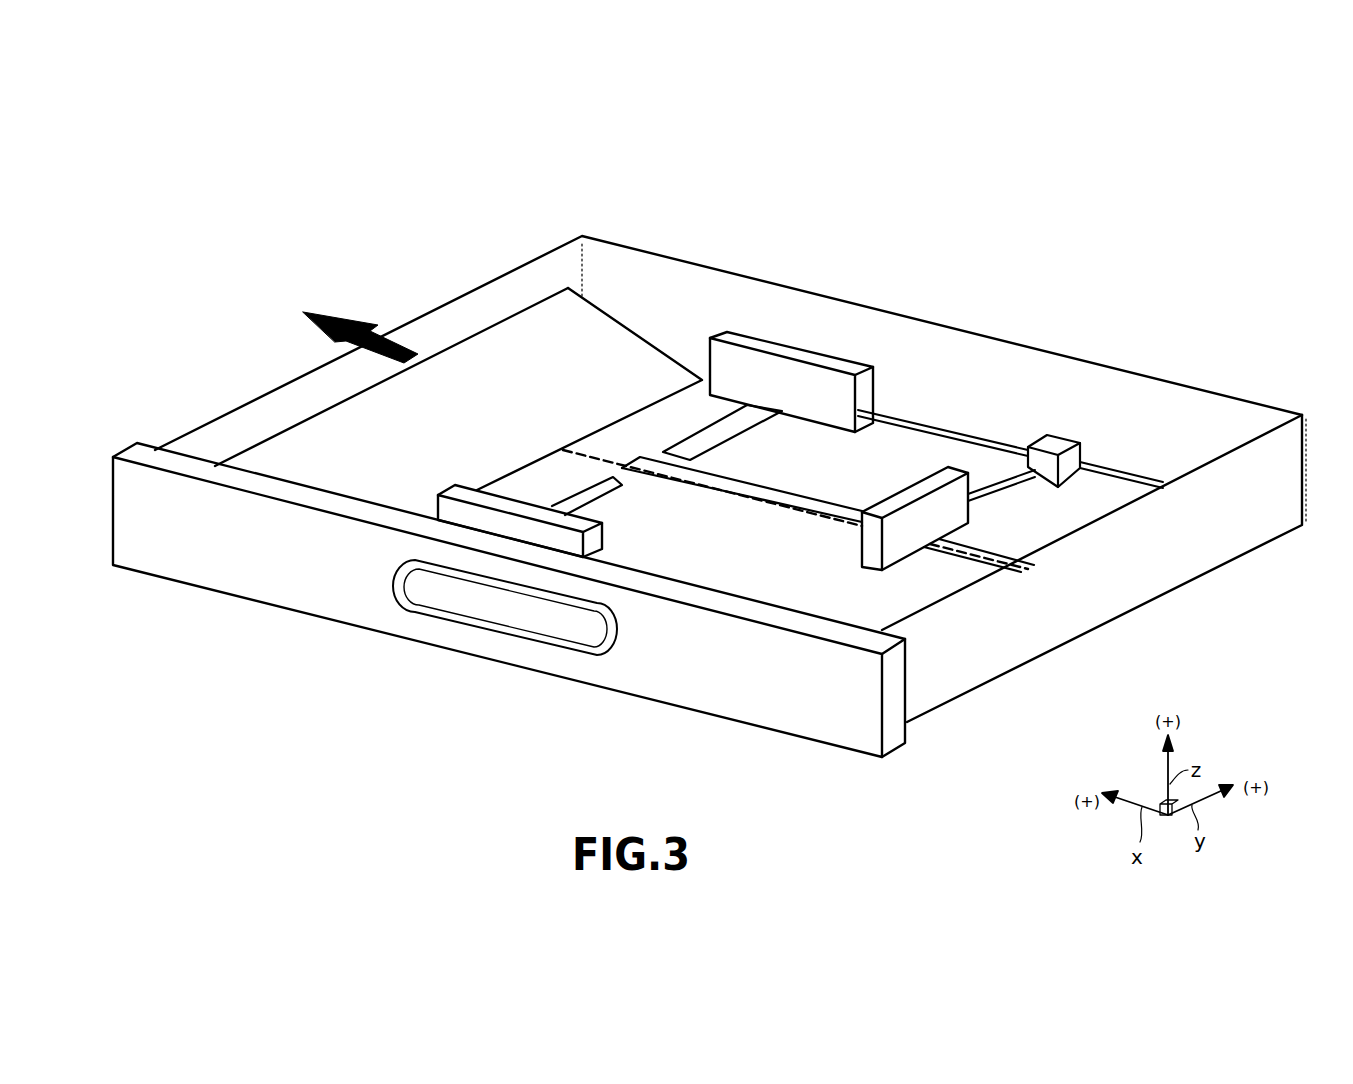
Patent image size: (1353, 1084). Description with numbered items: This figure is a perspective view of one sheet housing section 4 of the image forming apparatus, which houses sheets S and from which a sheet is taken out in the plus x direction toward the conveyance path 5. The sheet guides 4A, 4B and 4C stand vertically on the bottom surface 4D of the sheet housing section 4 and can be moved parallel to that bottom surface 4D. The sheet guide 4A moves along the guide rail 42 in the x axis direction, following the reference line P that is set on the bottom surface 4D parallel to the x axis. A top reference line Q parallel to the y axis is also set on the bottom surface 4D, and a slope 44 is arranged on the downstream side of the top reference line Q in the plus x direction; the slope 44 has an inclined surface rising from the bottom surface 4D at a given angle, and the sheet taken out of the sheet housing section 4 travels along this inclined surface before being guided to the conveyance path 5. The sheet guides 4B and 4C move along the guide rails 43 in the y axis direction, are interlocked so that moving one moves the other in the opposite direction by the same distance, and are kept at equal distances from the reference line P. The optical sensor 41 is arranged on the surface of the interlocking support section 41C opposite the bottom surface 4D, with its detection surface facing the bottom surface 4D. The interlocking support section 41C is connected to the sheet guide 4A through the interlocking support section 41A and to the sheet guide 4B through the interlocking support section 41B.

The sheet housing section 4 is at (582, 204).
The sheet guide 4A is at (930, 540).
The sheet guide 4B is at (822, 356).
The sheet guide 4C is at (530, 512).
The bottom surface 4D is at (905, 481).
The conveyance path 5 is at (348, 318).
The optical sensor 41 is at (1086, 479).
The interlocking support section 41A is at (1043, 490).
The interlocking support section 41B is at (906, 432).
The interlocking support section 41C is at (1060, 437).
The guide rail 42 is at (788, 520).
The guide rails 43 is at (607, 498).
The slope 44 is at (533, 343).
The reference line P is at (760, 498).
The top reference line Q is at (643, 398).